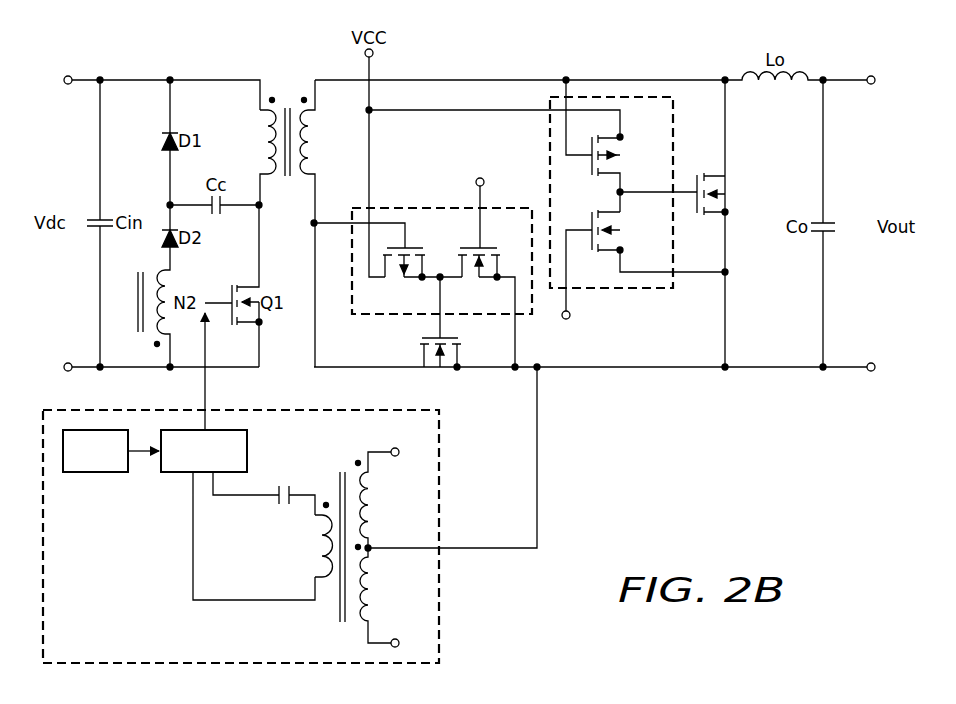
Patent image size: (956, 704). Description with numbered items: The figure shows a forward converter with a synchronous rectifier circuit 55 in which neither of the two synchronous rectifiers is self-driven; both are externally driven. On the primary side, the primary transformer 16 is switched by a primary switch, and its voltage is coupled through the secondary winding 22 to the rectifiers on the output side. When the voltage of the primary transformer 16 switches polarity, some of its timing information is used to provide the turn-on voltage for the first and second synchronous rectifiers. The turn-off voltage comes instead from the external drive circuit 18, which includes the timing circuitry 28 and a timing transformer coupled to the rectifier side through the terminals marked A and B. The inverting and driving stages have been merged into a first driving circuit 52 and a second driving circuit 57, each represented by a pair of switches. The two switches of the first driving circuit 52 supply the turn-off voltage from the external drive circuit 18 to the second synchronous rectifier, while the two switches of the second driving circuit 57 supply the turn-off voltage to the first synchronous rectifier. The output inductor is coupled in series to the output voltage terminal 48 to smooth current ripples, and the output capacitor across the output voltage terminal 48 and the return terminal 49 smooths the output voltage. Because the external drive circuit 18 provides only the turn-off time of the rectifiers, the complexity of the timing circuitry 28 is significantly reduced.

The primary transformer 16 is at (266, 57).
The secondary winding 22 is at (313, 163).
The second driving circuit 57 is at (412, 206).
The first driving circuit 52 is at (604, 291).
The output voltage terminal 48 is at (873, 74).
The output terminal 49 is at (871, 372).
The synchronous rectifier circuit 55 is at (724, 509).
The external drive circuit 18 is at (127, 589).
The timing circuitry 28 is at (176, 475).